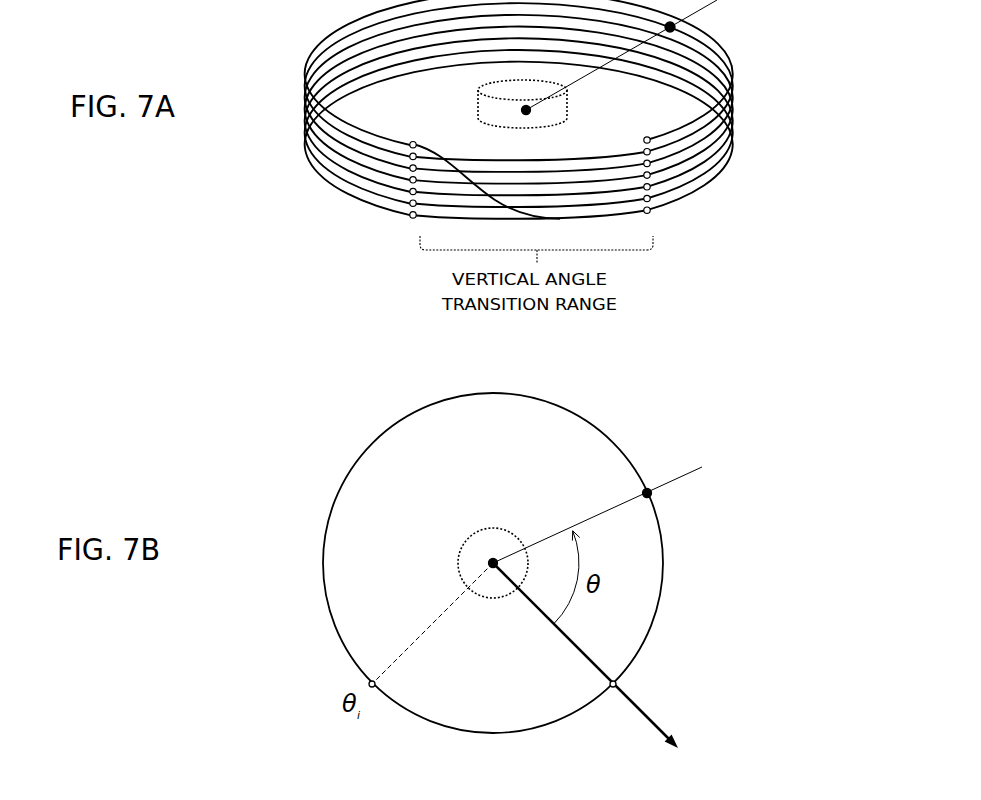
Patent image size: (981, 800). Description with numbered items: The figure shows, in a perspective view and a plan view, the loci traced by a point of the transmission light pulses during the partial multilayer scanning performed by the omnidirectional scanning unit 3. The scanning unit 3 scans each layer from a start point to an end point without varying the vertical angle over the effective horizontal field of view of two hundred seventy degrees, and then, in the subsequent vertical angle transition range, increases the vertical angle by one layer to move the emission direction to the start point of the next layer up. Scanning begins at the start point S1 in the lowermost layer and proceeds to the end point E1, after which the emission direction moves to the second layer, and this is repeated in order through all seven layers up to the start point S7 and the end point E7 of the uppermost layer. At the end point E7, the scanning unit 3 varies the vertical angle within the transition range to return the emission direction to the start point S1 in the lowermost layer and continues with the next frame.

In FIG. 7A, the omnidirectional scanning unit 3 is at (480, 99).
In FIG. 7B, the omnidirectional scanning unit 3 is at (465, 544).
In FIG. 7A, the end point in the uppermost layer E7 is at (411, 127).
In FIG. 7A, the start point in the uppermost layer S7 is at (636, 124).
In FIG. 7A, the end point in the lowermost layer E1 is at (399, 229).
In FIG. 7A, the start point in the lowermost layer S1 is at (664, 220).